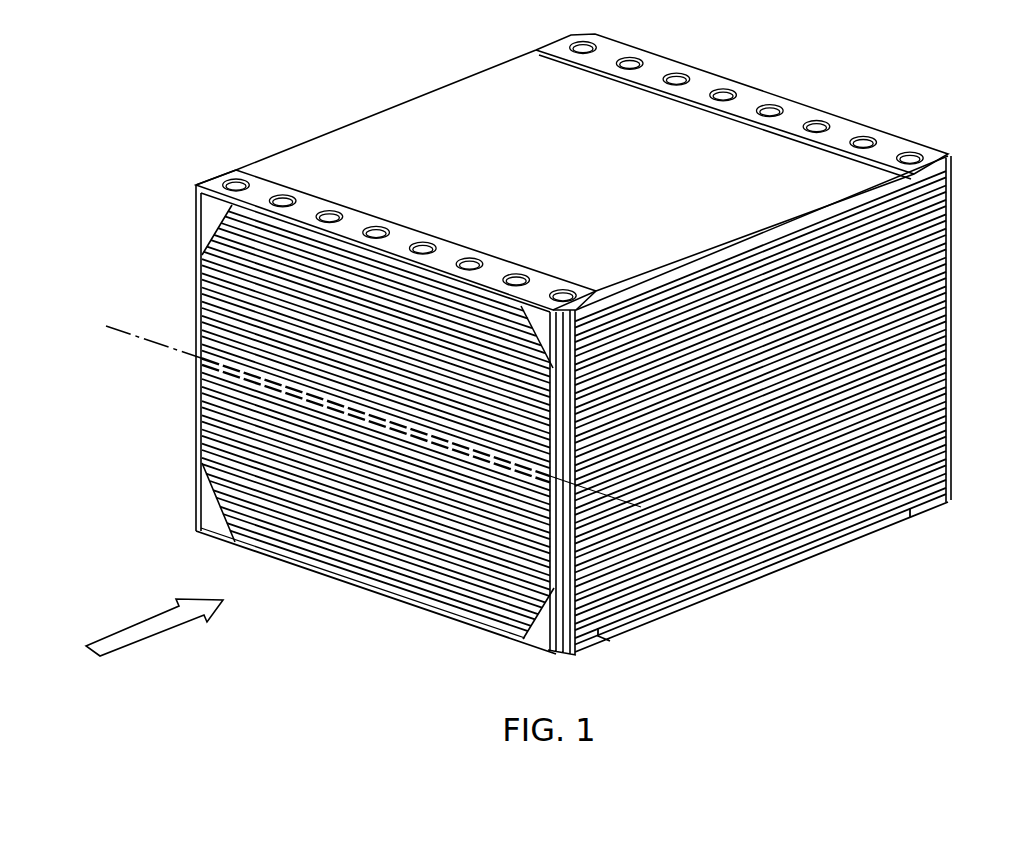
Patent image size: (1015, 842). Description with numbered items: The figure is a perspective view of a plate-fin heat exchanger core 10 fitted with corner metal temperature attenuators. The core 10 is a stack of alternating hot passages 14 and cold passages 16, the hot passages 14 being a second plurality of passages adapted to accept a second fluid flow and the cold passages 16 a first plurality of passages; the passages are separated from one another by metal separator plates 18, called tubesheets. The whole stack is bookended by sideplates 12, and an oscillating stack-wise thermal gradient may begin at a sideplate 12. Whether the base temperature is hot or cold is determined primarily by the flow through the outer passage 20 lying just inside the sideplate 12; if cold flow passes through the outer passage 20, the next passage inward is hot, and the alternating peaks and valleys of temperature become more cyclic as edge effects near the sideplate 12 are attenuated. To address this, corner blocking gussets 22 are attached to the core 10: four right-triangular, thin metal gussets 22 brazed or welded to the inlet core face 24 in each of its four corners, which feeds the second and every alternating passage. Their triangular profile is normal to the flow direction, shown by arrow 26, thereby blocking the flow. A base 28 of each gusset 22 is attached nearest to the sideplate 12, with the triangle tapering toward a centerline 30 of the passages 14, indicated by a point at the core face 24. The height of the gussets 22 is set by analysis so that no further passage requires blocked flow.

The heat exchanger core 10 is at (377, 75).
The sideplate 12 is at (568, 171).
The hot passages 14 is at (198, 357).
The cold passages 16 is at (933, 253).
The separator plates 18 is at (200, 398).
The outer passage 20 is at (935, 160).
The corner blocking gussets 22 is at (197, 217).
The inlet core face 24 is at (380, 600).
The arrow 26 is at (138, 618).
The base 28 is at (517, 633).
The centerline 30 is at (120, 327).